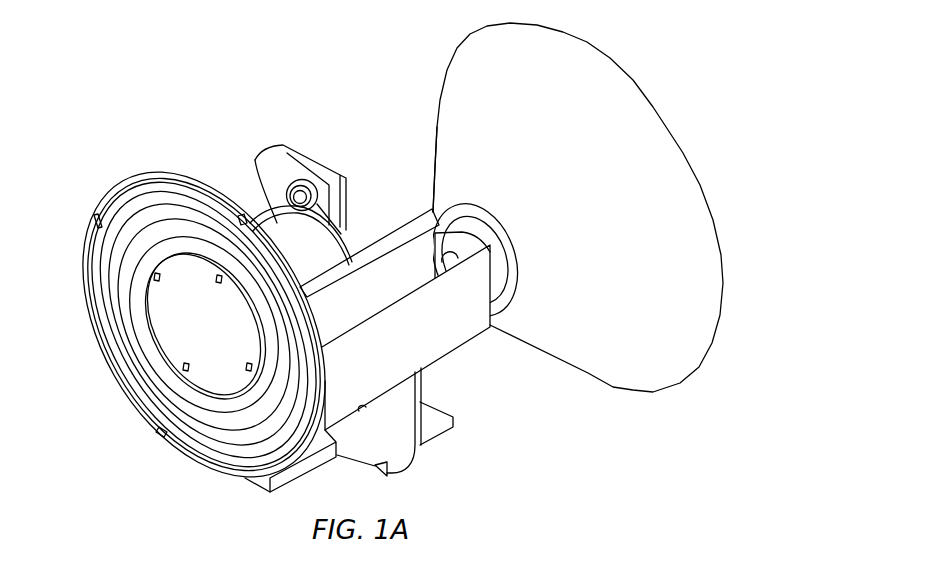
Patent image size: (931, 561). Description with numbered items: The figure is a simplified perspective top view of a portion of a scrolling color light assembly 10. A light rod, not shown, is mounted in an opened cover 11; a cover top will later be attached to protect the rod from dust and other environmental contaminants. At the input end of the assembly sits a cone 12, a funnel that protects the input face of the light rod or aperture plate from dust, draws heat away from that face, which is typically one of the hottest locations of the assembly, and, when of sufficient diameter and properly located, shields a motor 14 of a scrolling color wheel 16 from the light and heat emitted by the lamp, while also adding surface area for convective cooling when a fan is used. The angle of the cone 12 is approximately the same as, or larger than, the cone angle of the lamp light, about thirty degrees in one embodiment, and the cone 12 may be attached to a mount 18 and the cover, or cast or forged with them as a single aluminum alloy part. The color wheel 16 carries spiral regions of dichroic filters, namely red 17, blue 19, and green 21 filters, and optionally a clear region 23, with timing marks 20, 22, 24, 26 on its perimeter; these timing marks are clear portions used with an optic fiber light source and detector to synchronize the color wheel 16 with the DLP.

The scrolling color light assembly 10 is at (178, 83).
The cover 11 is at (451, 343).
The cone 12 is at (454, 79).
The motor 14 is at (252, 222).
The scrolling color wheel 16 is at (130, 390).
The red filter 17 is at (137, 298).
The mount 18 is at (422, 451).
The blue filter 19 is at (125, 313).
The timing mark 20 is at (88, 223).
The green filter 21 is at (115, 325).
The timing mark 22 is at (163, 434).
The clear region 23 is at (108, 340).
The timing mark 24 is at (245, 217).
The timing mark 26 is at (333, 452).